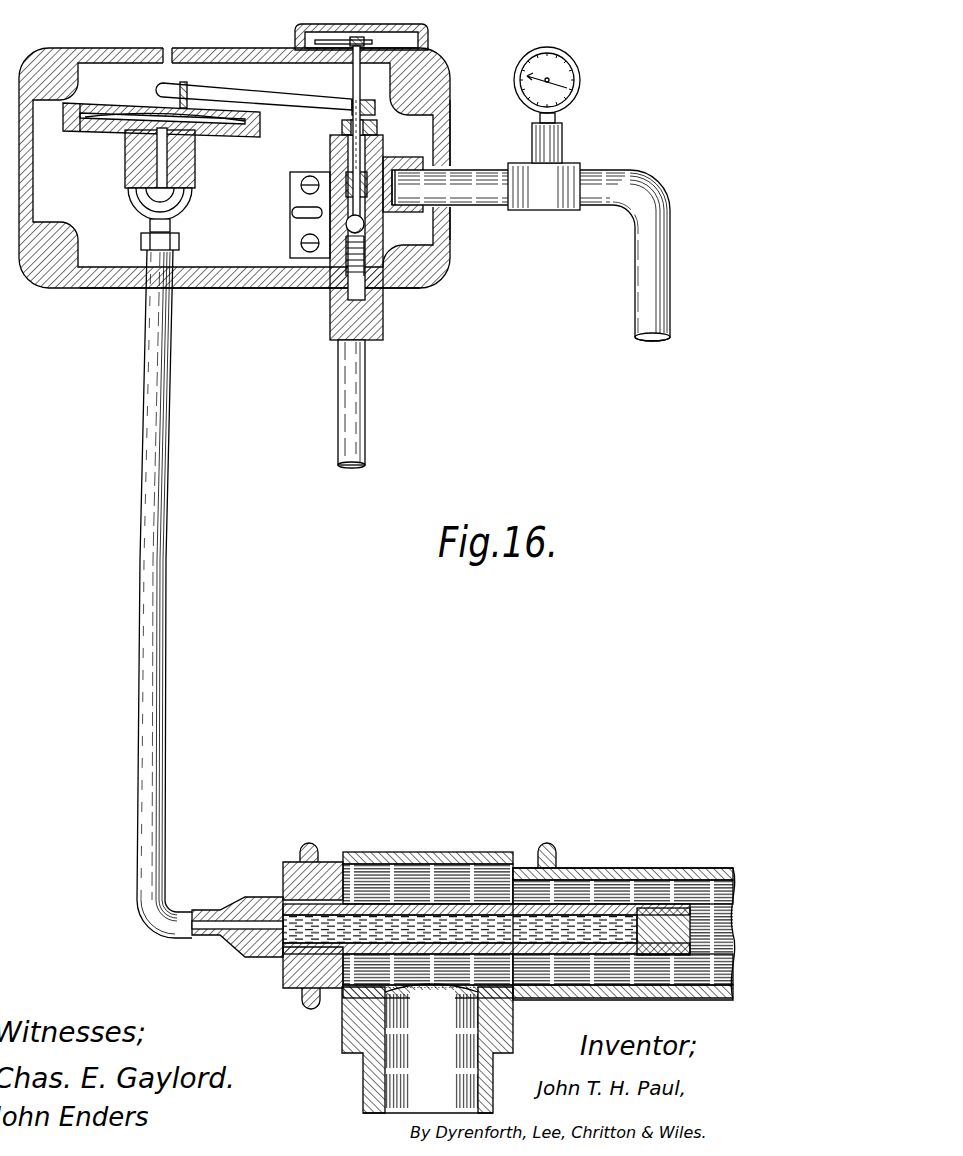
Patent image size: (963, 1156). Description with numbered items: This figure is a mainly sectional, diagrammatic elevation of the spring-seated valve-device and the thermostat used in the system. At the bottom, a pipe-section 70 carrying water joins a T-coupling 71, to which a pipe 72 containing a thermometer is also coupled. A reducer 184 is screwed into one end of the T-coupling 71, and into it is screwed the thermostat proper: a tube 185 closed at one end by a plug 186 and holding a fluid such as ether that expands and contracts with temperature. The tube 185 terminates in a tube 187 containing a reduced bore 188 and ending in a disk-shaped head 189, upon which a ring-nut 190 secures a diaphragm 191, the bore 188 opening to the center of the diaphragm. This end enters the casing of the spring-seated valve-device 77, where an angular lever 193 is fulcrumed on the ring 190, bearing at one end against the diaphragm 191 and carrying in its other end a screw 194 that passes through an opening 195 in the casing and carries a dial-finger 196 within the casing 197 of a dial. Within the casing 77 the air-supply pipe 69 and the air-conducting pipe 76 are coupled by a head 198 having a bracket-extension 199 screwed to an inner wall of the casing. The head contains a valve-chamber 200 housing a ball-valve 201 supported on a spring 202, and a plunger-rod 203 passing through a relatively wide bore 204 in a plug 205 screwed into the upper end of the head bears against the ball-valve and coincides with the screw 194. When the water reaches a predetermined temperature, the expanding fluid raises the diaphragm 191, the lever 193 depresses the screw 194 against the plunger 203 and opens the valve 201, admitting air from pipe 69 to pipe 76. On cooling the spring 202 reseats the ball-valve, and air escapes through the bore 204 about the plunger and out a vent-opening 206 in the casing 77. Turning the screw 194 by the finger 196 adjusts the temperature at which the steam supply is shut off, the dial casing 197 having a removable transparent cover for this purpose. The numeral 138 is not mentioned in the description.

The casing 138 is at (233, 155).
The vent-opening 206 is at (190, 42).
The valve-chamber 200 is at (285, 290).
The spring-seated valve-device casing 77 is at (418, 150).
The dial casing 197 is at (428, 45).
The dial-finger 196 is at (318, 42).
The opening 195 is at (385, 45).
The angular lever 193 is at (262, 92).
The screw 194 is at (356, 96).
The ring-nut 190 is at (105, 92).
The diaphragm 191 is at (130, 112).
The disk-shaped head 189 is at (212, 140).
The reduced bore 188 is at (130, 162).
The tube 187 is at (185, 207).
The spring 202 is at (386, 302).
The plug 205 is at (395, 130).
The plunger-rod 203 is at (345, 130).
The ball-valve 201 is at (383, 228).
The air-supply pipe 69 is at (366, 412).
The bore 204 is at (292, 180).
The head 198 is at (292, 205).
The bracket-extension 199 is at (292, 237).
The air-conducting pipe 76 is at (488, 205).
The reducer 184 is at (283, 866).
The T-coupling 71 is at (420, 852).
The pipe 72 is at (600, 870).
The tube 185 is at (598, 955).
The plug 186 is at (684, 940).
The pipe-section 70 is at (485, 1080).